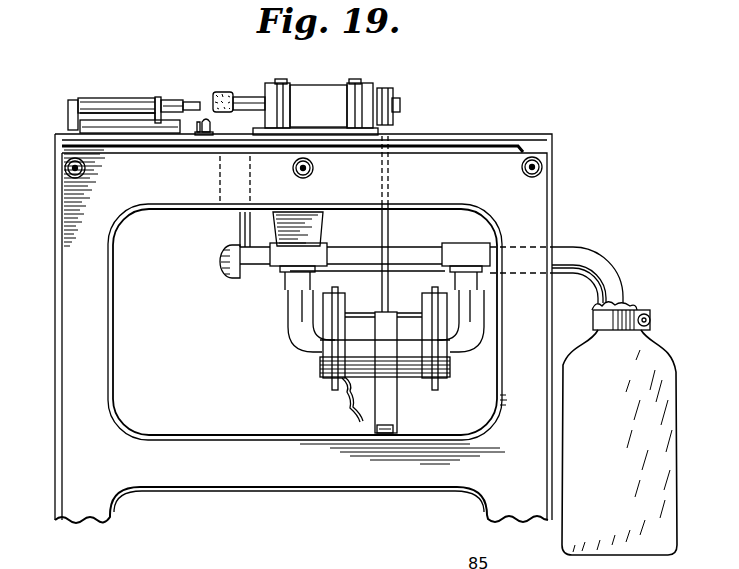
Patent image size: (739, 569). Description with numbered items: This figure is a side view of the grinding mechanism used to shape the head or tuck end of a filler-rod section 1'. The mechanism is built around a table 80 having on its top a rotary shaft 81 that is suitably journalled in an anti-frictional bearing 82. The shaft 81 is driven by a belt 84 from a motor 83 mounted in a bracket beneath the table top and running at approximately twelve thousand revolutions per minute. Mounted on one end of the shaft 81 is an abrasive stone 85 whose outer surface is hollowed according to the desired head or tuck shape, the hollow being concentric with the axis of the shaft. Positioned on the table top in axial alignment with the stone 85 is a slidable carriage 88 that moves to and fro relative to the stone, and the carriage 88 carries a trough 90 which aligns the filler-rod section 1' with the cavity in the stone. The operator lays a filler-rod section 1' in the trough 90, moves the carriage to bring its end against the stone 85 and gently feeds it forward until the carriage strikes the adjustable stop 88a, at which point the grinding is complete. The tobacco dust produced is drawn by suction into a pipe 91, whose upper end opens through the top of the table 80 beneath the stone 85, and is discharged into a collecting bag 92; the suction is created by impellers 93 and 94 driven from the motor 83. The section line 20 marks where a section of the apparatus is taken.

The filler-rod section 1' is at (124, 100).
The slidable carriage 88 is at (157, 101).
The trough 90 is at (177, 100).
The section line 20 is at (201, 62).
The abrasive stone 85 is at (223, 92).
The rotary shaft 81 is at (253, 93).
The anti-frictional bearing 82 is at (318, 90).
The belt 84 is at (393, 124).
The table 80 is at (540, 143).
The adjustable stop 88a is at (207, 135).
The suction pipe 91 is at (228, 224).
The impeller 93 is at (346, 299).
The impeller 94 is at (422, 301).
The motor 83 is at (407, 380).
The collecting bag 92 is at (622, 457).